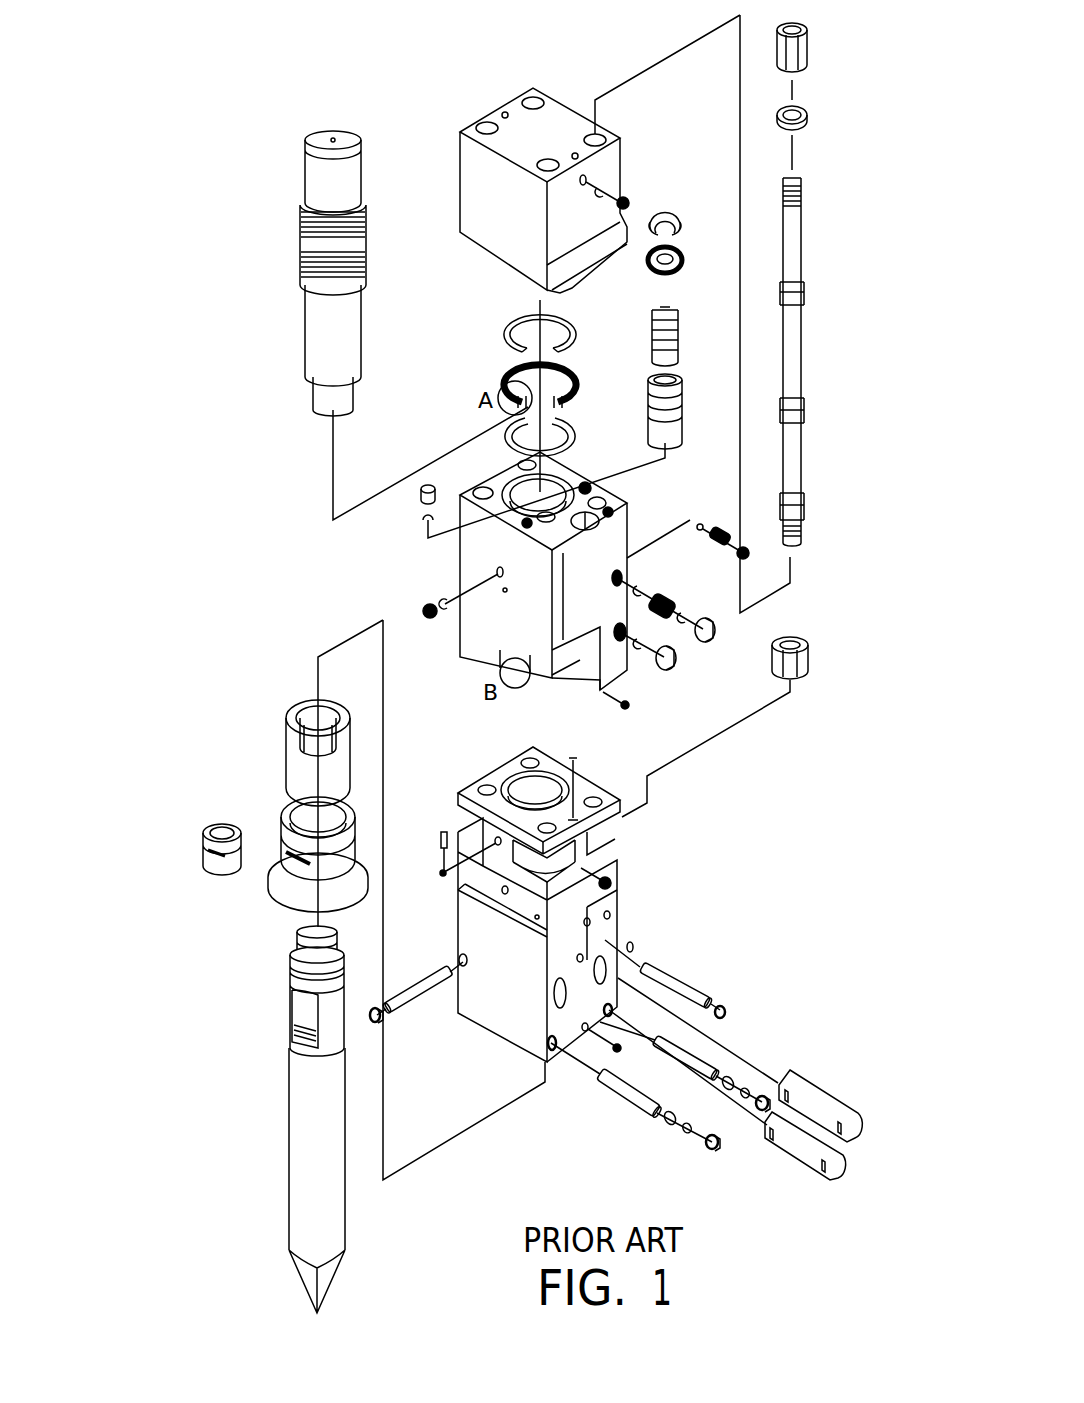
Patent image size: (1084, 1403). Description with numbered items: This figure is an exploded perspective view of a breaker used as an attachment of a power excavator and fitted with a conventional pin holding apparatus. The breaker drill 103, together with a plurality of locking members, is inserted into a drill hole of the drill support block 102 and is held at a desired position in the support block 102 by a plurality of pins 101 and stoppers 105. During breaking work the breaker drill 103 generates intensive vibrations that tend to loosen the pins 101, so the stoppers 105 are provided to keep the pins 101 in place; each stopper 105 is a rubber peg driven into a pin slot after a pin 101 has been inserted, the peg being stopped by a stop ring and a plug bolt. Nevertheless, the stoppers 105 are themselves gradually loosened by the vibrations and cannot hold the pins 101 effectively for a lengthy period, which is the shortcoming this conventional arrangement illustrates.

The pin 101 is at (427, 992).
The drill support block 102 is at (617, 910).
The breaker drill 103 is at (302, 1158).
The stopper 105 is at (377, 1027).